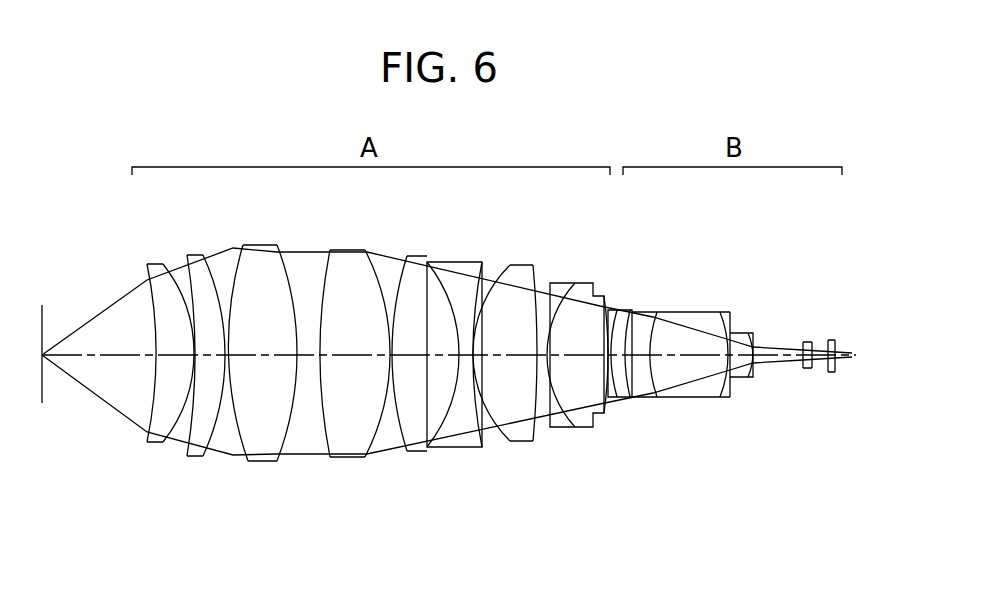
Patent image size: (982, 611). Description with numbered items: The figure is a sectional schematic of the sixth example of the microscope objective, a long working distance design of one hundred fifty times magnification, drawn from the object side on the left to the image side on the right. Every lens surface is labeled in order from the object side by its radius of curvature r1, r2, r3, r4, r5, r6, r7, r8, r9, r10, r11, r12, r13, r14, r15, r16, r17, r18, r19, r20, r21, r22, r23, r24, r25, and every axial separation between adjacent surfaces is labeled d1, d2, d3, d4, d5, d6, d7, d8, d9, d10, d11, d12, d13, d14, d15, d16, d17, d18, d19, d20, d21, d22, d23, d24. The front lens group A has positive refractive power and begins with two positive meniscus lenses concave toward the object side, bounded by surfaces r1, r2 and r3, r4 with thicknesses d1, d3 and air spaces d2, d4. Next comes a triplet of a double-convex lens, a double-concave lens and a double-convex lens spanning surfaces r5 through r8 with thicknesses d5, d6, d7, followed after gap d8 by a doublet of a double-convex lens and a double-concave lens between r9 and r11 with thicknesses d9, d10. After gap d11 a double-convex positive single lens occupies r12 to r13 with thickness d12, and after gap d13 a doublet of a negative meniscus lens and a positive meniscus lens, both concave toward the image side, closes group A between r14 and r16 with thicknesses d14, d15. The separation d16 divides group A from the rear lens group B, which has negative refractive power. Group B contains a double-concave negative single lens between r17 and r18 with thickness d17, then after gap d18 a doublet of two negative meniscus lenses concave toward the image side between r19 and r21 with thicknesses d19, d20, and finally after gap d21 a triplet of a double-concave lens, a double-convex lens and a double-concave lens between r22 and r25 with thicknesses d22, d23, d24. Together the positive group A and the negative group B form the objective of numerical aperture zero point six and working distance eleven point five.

The radius of curvature of the first lens surface r1 is at (148, 288).
The radius of curvature of the second lens surface r2 is at (166, 272).
The radius of curvature of the third lens surface r3 is at (184, 253).
The radius of curvature of the fourth lens surface r4 is at (206, 254).
The radius of curvature of the fifth lens surface r5 is at (241, 245).
The radius of curvature of the sixth lens surface r6 is at (278, 245).
The radius of curvature of the seventh lens surface r7 is at (329, 250).
The radius of curvature of the eighth lens surface r8 is at (366, 250).
The radius of curvature of the ninth lens surface r9 is at (404, 256).
The radius of curvature of the tenth lens surface r10 is at (436, 262).
The radius of curvature of the eleventh lens surface r11 is at (474, 262).
The radius of curvature of the twelfth lens surface r12 is at (512, 266).
The radius of curvature of the thirteenth lens surface r13 is at (540, 266).
The radius of curvature of the fourteenth lens surface r14 is at (566, 283).
The radius of curvature of the fifteenth lens surface r15 is at (605, 296).
The radius of curvature of the sixteenth lens surface r16 is at (633, 310).
The radius of curvature of the seventeenth lens surface r17 is at (639, 312).
The radius of curvature of the eighteenth lens surface r18 is at (660, 312).
The radius of curvature of the nineteenth lens surface r19 is at (718, 312).
The radius of curvature of the twentieth lens surface r20 is at (729, 333).
The radius of curvature of the twenty-first lens surface r21 is at (755, 336).
The radius of curvature of the twenty-second lens surface r22 is at (803, 343).
The radius of curvature of the twenty-third lens surface r23 is at (812, 343).
The radius of curvature of the twenty-fourth lens surface r24 is at (832, 341).
The radius of curvature of the twenty-fifth lens surface r25 is at (837, 345).
The separation between lens surfaces d1 is at (170, 362).
The separation between lens surfaces d2 is at (194, 362).
The separation between lens surfaces d3 is at (203, 362).
The separation between lens surfaces d4 is at (225, 362).
The separation between lens surfaces d5 is at (270, 362).
The separation between lens surfaces d6 is at (308, 362).
The separation between lens surfaces d7 is at (356, 362).
The separation between lens surfaces d8 is at (393, 362).
The separation between lens surfaces d9 is at (420, 362).
The separation between lens surfaces d10 is at (463, 362).
The separation between lens surfaces d11 is at (483, 362).
The separation between lens surfaces d12 is at (503, 362).
The separation between lens surfaces d13 is at (542, 362).
The separation between lens surfaces d14 is at (578, 362).
The separation between lens surfaces d15 is at (588, 362).
The separation between lens surfaces d16 is at (616, 362).
The separation between lens surfaces d17 is at (627, 362).
The separation between lens surfaces d18 is at (640, 362).
The separation between lens surfaces d19 is at (687, 362).
The separation between lens surfaces d20 is at (733, 362).
The separation between lens surfaces d21 is at (773, 362).
The separation between lens surfaces d22 is at (806, 362).
The separation between lens surfaces d23 is at (818, 362).
The separation between lens surfaces d24 is at (833, 362).